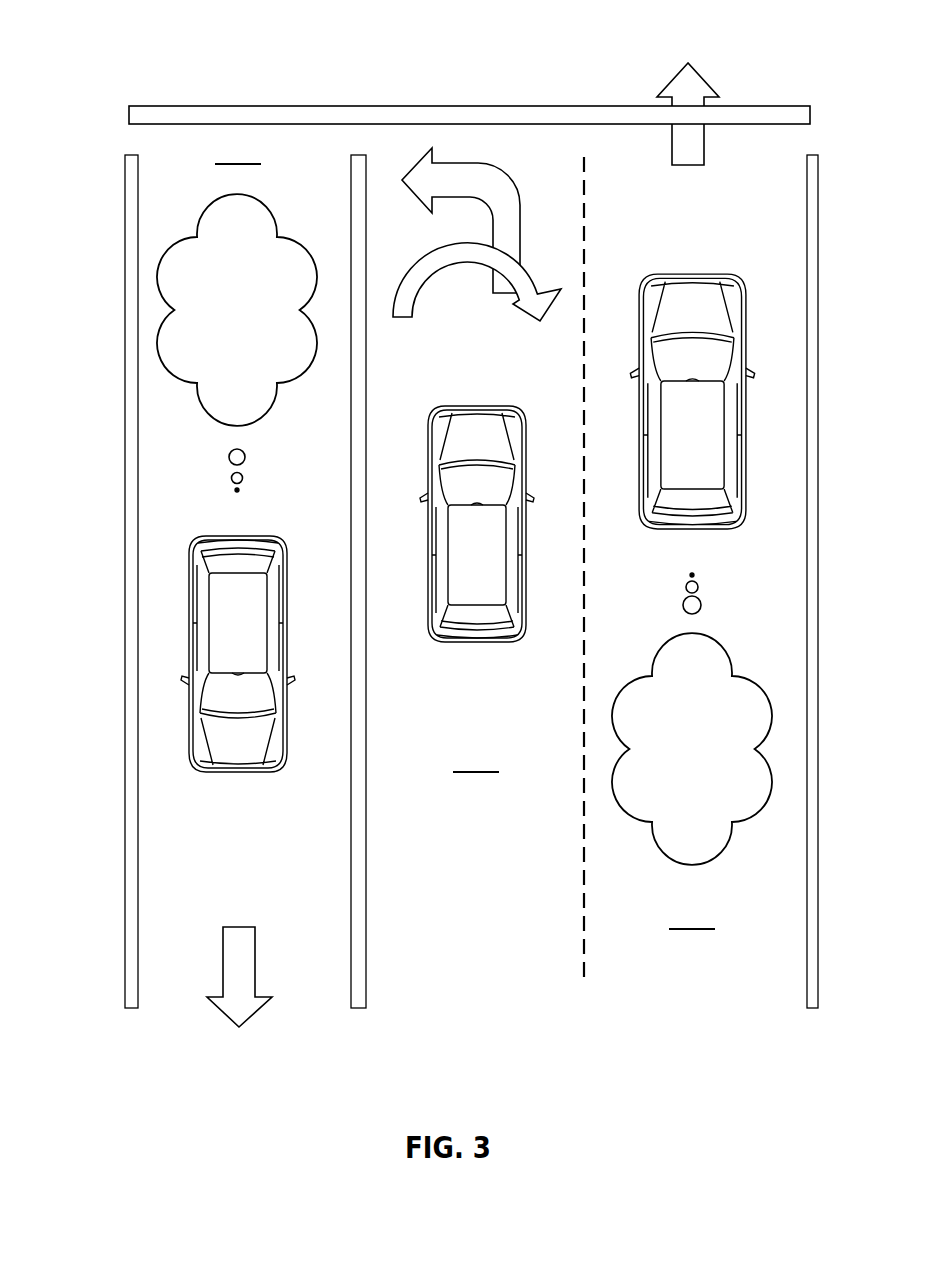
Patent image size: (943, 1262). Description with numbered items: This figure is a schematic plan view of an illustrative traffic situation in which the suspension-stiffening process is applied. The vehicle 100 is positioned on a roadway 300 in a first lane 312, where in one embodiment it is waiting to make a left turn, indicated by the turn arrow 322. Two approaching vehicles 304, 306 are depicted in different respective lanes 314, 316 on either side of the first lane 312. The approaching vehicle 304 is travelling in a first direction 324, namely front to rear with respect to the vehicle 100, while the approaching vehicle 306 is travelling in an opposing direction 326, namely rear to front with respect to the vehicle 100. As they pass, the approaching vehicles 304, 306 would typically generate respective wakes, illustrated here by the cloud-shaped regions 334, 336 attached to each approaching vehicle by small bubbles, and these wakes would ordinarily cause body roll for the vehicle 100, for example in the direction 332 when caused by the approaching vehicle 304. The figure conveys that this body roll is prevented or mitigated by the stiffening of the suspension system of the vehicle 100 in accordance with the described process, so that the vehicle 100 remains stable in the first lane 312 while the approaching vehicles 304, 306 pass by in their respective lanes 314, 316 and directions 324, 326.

The roadway 300 is at (162, 56).
The vehicle 100 is at (492, 643).
The approaching vehicle 304 is at (188, 722).
The approaching vehicle 306 is at (708, 276).
The first lane 312 is at (476, 756).
The lane 314 is at (238, 148).
The lane 316 is at (692, 913).
The left turn 322 is at (425, 155).
The first direction 324 is at (224, 1012).
The opposing direction 326 is at (700, 76).
The direction 332 is at (455, 245).
The thought bubble of first other vehicle 334 is at (157, 293).
The thought bubble of second other vehicle 336 is at (720, 648).